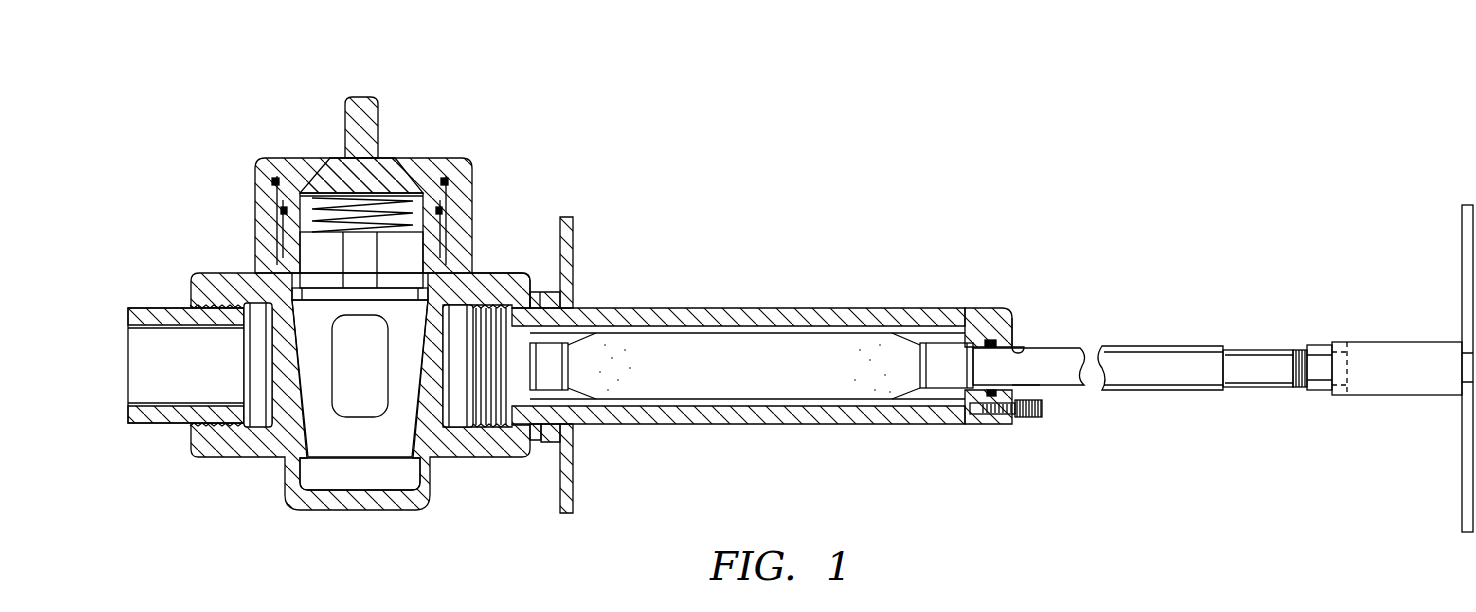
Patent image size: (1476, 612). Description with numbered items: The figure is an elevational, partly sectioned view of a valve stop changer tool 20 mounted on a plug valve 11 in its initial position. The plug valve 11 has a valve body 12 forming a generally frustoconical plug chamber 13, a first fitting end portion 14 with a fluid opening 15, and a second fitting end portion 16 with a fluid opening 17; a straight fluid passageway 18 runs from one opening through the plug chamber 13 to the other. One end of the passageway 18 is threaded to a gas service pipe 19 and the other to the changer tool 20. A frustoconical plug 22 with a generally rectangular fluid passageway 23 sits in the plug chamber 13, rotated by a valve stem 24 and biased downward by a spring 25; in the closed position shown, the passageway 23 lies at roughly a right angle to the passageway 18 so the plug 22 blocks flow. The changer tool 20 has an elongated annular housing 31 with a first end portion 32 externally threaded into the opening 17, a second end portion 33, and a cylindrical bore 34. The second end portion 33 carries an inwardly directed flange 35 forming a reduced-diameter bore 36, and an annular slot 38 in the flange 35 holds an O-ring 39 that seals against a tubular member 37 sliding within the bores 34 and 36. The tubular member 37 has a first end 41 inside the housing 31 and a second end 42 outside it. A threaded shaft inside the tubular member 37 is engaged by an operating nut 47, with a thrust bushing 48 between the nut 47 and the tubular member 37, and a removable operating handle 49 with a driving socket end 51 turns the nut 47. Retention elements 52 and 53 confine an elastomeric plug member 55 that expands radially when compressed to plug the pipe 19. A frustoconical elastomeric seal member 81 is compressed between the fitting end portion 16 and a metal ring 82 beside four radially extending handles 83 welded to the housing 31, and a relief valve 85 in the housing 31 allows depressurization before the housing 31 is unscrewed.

The plug valve 11 is at (481, 94).
The valve body 12 is at (470, 210).
The plug chamber 13 is at (352, 489).
The first fitting end portion 14 is at (213, 273).
The fluid opening 15 is at (182, 425).
The second fitting end portion 16 is at (493, 275).
The fluid opening 17 is at (480, 392).
The fluid passageway 18 is at (286, 405).
The gas service pipe 19 is at (185, 354).
The valve stop changer tool 20 is at (760, 262).
The plug 22 is at (360, 344).
The fluid passageway 23 is at (374, 379).
The valve stem 24 is at (380, 112).
The spring 25 is at (336, 196).
The housing 31 is at (801, 306).
The first end portion 32 is at (542, 292).
The second end portion 33 is at (1000, 308).
The cylindrical bore 34 is at (578, 333).
The flange 35 is at (1014, 318).
The cylindrical bore 36 is at (1019, 347).
The tubular member 37 is at (1161, 344).
The annular slot 38 is at (988, 339).
The O-ring 39 is at (1000, 386).
The first end 41 is at (1060, 348).
The second end 42 is at (1240, 350).
The operating nut 47 is at (1318, 345).
The thrust bushing 48 is at (1298, 388).
The operating handle 49 is at (1462, 230).
The driving socket end 51 is at (1345, 342).
The retention element 52 is at (562, 375).
The retention element 53 is at (918, 362).
The elastomeric plug member 55 is at (706, 376).
The elastomeric seal member 81 is at (535, 441).
The metal ring 82 is at (555, 442).
The radially extending handles 83 is at (574, 480).
The relief valve 85 is at (1028, 418).